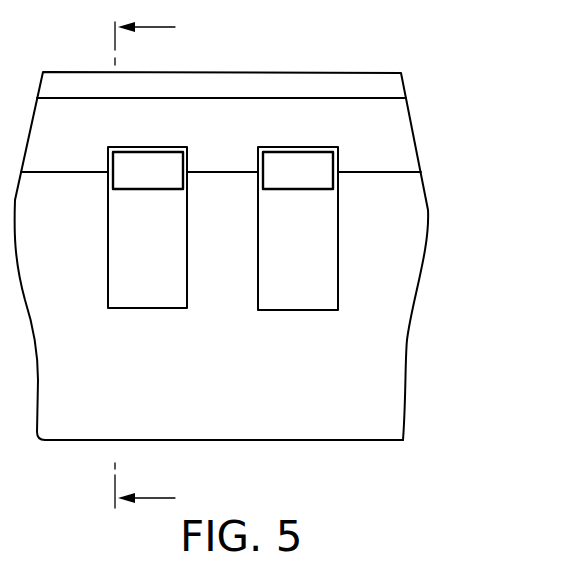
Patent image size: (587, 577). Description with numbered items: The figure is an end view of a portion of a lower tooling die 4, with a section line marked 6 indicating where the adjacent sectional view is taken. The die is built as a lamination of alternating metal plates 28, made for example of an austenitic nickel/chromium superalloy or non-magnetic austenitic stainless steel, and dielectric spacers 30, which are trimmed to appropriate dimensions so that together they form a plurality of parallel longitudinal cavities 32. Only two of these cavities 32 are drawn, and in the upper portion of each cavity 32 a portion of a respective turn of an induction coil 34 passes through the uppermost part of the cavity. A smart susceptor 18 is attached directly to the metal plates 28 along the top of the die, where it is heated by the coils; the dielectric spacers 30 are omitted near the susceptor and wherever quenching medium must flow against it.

The lower tooling die 4 is at (355, 443).
The section line 6- 6 is at (128, 260).
The smart susceptor 18 is at (297, 88).
The metal plates 28 is at (390, 140).
The dielectric spacers 30 is at (378, 358).
The cavities 32 is at (112, 287).
The induction coil 34 is at (148, 190).